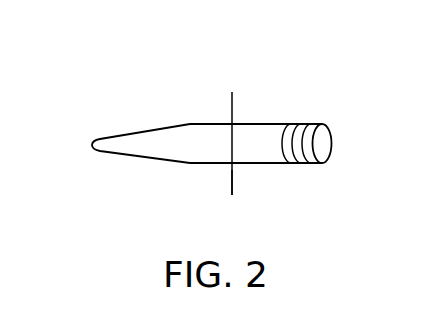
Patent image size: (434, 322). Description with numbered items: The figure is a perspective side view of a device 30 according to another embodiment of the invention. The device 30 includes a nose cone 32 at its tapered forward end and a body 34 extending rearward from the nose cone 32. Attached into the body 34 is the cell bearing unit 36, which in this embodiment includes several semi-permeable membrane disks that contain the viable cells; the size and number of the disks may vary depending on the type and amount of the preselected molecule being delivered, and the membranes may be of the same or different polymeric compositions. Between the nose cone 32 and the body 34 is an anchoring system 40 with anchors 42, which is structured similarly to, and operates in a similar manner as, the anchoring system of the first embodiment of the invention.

The device 30 is at (223, 130).
The nose cone 32 is at (87, 112).
The body 34 is at (284, 122).
The cell bearing unit 36 is at (336, 118).
The anchoring system 40 is at (224, 187).
The anchors 42 is at (231, 93).